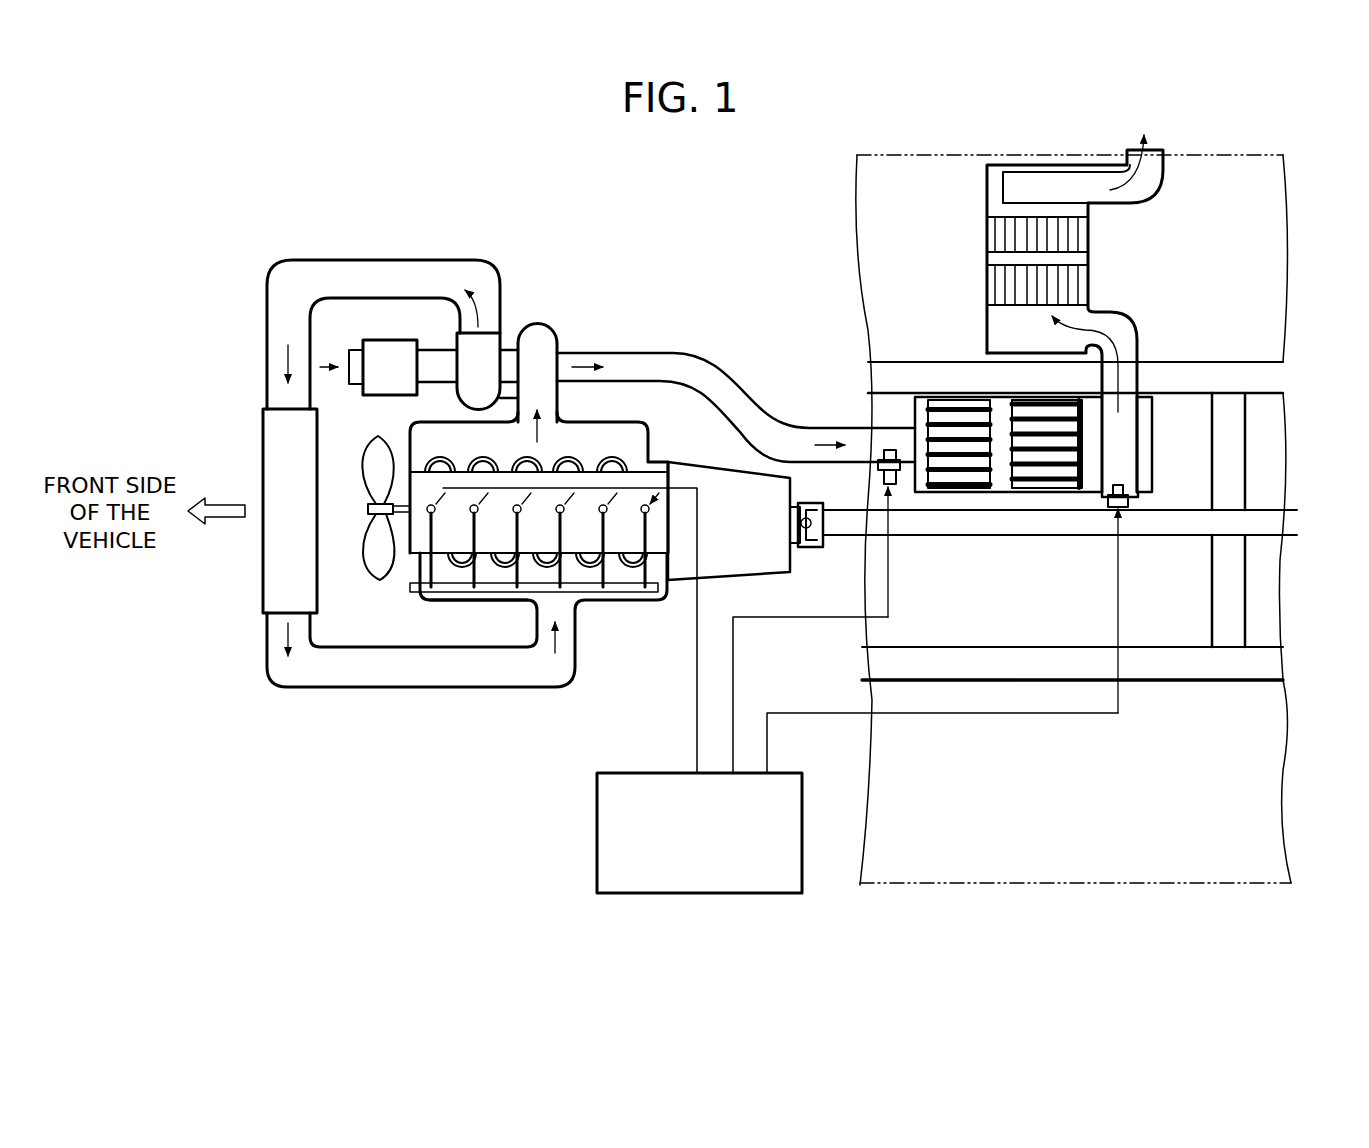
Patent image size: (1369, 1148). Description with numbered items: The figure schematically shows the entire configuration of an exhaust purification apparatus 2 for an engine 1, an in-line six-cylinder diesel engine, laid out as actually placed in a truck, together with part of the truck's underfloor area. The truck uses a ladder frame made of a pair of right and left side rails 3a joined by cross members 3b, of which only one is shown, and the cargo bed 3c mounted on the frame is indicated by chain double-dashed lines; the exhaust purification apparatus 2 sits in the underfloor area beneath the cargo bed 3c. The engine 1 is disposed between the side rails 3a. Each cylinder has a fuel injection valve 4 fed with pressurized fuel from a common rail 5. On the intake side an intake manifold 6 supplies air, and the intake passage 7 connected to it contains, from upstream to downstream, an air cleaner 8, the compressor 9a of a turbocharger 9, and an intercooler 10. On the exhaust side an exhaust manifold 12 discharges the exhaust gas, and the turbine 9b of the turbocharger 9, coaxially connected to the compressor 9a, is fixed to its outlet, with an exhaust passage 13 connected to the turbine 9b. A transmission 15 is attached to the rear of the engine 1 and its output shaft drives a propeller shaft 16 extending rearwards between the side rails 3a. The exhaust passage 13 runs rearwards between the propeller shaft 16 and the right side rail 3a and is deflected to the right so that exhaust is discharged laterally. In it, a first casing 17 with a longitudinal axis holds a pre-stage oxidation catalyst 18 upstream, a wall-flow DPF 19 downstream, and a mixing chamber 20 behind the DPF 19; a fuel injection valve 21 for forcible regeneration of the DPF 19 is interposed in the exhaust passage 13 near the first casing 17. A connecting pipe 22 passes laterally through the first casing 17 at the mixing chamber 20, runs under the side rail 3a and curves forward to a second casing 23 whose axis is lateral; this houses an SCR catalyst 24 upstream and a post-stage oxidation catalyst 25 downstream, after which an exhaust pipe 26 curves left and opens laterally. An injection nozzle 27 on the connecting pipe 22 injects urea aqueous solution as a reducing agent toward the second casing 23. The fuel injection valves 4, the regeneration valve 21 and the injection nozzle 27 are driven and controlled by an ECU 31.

The engine 1 is at (363, 740).
The exhaust purification apparatus 2 is at (903, 346).
The side rails 3a is at (1268, 372).
The cross member 3b is at (1232, 572).
The cargo bed 3c is at (1283, 813).
The fuel injection valve 4 is at (607, 513).
The common rail 5 is at (592, 598).
The intake manifold 6 is at (470, 602).
The intake passage 7 is at (378, 259).
The air cleaner 8 is at (377, 392).
The turbocharger 9 is at (517, 317).
The compressor 9a is at (486, 333).
The turbine 9b is at (540, 332).
The intercooler 10 is at (270, 434).
The exhaust manifold 12 is at (648, 430).
The exhaust passage 13 is at (688, 368).
The transmission 15 is at (738, 486).
The propeller shaft 16 is at (846, 528).
The first casing 17 is at (1003, 478).
The pre-stage oxidation catalyst 18 is at (962, 478).
The DPF 19 is at (1045, 478).
The mixing chamber 20 is at (1090, 474).
The fuel injection valve for forcible regeneration 21 is at (895, 487).
The connecting pipe 22 is at (1128, 446).
The second casing 23 is at (1000, 262).
The SCR catalyst 24 is at (1000, 293).
The post-stage oxidation catalyst 25 is at (1000, 234).
The exhaust pipe 26 is at (1040, 180).
The injection nozzle 27 is at (1122, 510).
The ECU 31 is at (597, 783).